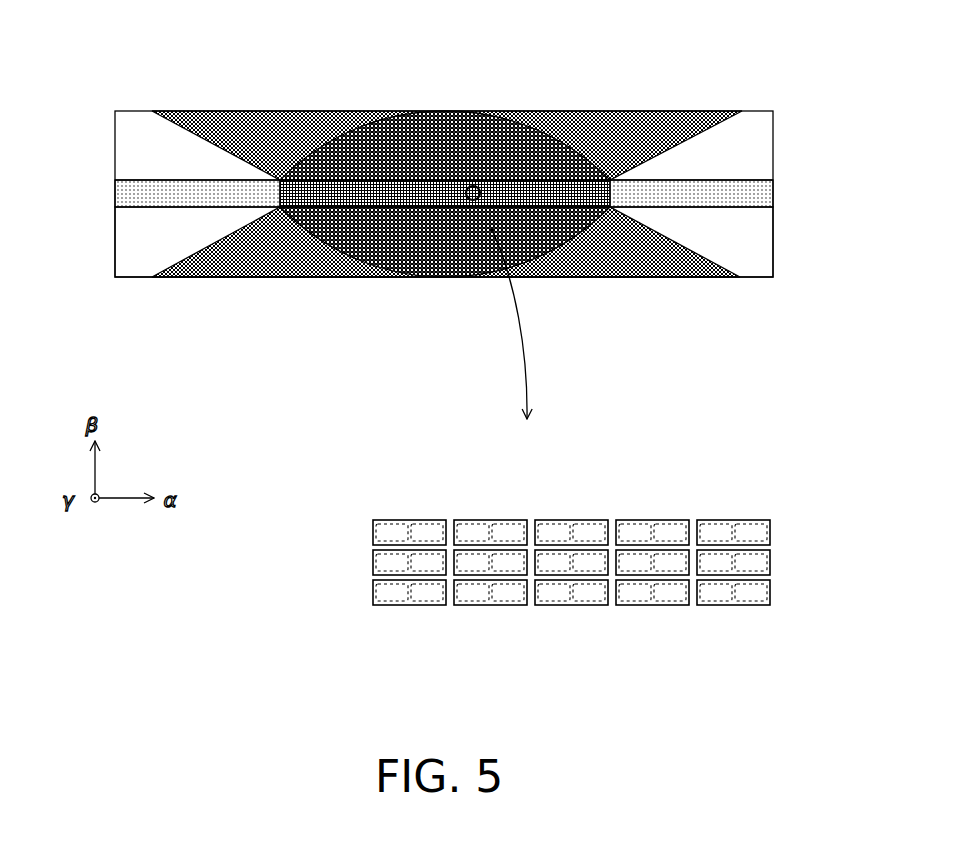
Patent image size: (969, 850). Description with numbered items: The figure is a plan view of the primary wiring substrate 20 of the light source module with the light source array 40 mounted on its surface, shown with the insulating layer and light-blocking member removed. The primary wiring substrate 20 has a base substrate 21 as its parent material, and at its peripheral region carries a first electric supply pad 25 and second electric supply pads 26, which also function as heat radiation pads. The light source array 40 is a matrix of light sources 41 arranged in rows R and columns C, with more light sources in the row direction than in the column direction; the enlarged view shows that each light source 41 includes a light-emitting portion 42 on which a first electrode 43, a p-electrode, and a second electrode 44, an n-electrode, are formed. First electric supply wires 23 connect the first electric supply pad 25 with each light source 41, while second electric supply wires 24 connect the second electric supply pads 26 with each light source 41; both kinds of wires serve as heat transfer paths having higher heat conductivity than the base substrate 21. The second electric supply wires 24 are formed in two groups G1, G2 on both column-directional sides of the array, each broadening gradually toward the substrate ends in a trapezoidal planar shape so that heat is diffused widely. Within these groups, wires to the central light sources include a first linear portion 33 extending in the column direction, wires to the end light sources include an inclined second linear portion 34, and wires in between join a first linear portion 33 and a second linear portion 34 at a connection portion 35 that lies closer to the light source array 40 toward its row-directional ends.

The primary wiring substrate 20 is at (758, 110).
The base substrate 21 is at (775, 242).
The first electric supply wire 23 is at (140, 180).
The second electric supply wire 24 is at (228, 111).
The first electric supply pad 25 is at (115, 193).
The second electric supply pad 26 is at (265, 111).
The first linear portion 33 is at (360, 111).
The second linear portion 34 is at (395, 111).
The connection portion 35 is at (433, 111).
The light source array 40 is at (614, 198).
The light source 41 is at (571, 564).
The light-emitting portion 42 is at (621, 564).
The first electrode 43 is at (711, 515).
The second electrode 44 is at (752, 515).
The group of second electric supply wires G1 is at (184, 131).
The group of second electric supply wires G2 is at (184, 257).
The column of light sources C is at (412, 518).
The row of light sources R is at (369, 526).